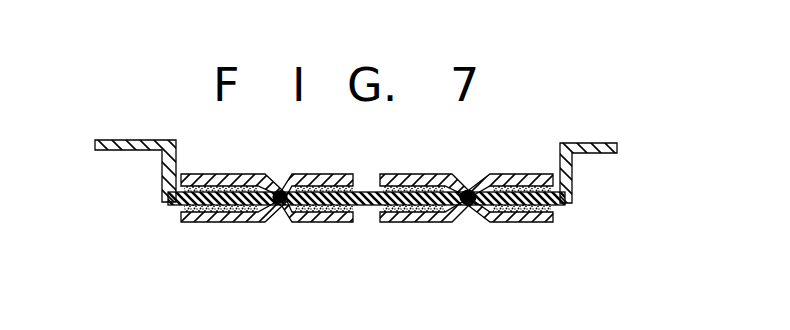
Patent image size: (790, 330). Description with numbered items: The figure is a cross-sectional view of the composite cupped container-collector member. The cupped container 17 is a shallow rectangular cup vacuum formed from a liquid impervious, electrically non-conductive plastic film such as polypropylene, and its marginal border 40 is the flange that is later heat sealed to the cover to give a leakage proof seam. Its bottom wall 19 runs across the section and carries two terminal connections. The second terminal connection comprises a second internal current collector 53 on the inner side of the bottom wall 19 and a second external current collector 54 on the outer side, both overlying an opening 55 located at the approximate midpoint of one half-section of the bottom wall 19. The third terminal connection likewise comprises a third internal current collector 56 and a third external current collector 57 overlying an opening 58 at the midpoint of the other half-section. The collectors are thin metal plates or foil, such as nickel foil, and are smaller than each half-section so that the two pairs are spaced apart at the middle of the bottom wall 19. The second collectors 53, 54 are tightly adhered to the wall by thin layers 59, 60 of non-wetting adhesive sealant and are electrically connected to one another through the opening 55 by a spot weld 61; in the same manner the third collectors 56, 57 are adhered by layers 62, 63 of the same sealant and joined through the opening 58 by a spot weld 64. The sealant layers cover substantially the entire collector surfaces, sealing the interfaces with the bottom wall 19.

The cupped container 17 is at (127, 133).
The bottom wall 19 is at (365, 192).
The marginal border 40 is at (594, 143).
The second internal current collector 53 is at (226, 174).
The second external current collector 54 is at (218, 222).
The opening 55 is at (282, 207).
The third internal current collector 56 is at (423, 176).
The third external current collector 57 is at (428, 221).
The opening 58 is at (482, 205).
The layer of adhesive sealant 59 is at (327, 178).
The layer of adhesive sealant 60 is at (343, 222).
The spot weld 61 is at (279, 191).
The layer of adhesive sealant 62 is at (512, 186).
The layer of adhesive sealant 63 is at (539, 221).
The spot weld 64 is at (468, 190).